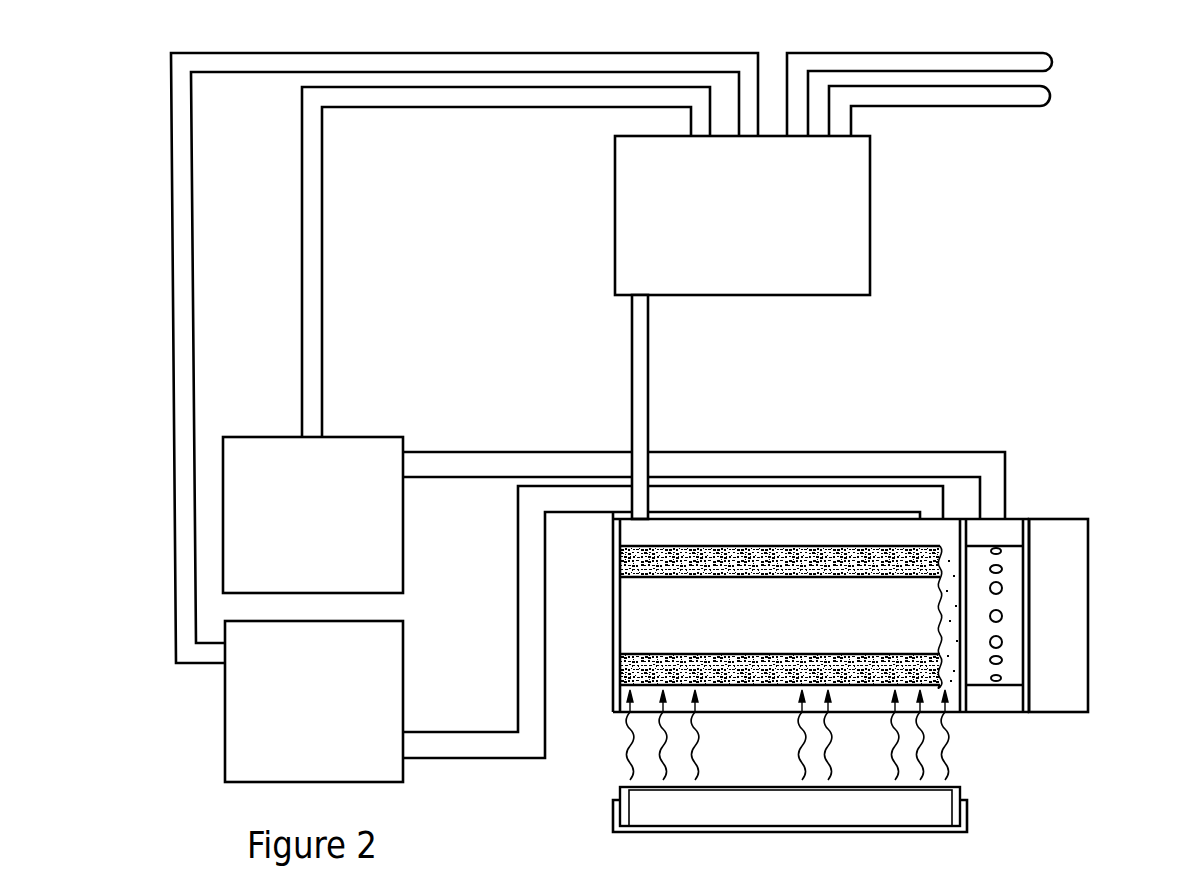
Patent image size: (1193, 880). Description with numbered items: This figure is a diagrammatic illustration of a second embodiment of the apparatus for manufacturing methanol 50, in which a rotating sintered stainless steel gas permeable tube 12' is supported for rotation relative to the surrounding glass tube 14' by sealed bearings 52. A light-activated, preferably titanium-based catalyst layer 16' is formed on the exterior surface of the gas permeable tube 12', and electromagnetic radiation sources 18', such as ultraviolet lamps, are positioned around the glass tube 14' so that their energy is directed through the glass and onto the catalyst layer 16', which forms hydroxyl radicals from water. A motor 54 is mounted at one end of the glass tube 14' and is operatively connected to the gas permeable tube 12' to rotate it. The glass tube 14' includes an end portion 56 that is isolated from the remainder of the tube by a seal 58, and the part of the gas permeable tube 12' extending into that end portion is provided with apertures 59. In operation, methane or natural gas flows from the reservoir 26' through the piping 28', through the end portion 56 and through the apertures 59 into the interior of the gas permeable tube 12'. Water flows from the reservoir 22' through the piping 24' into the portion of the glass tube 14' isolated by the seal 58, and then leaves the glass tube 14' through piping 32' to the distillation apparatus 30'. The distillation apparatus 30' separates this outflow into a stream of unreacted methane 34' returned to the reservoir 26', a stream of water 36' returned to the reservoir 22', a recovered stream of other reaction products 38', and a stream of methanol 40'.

The gas permeable tube 12' is at (789, 541).
The glass tube 14' is at (821, 695).
The catalyst layer 16' is at (787, 782).
The electromagnetic radiation sources 18' is at (738, 814).
The reservoir 22' is at (276, 701).
The piping 24' is at (673, 622).
The reservoir 26' is at (312, 482).
The piping 28' is at (704, 457).
The distillation apparatus 30' is at (790, 215).
The piping 32' is at (678, 407).
The stream of unreacted methane 34' is at (506, 262).
The stream of water 36' is at (410, 358).
The stream of other reaction products 38' is at (919, 72).
The stream of methanol 40' is at (939, 125).
The apparatus for manufacturing methanol 50 is at (158, 521).
The sealed bearings 52 is at (616, 519).
The motor 54 is at (1063, 562).
The end portion 56 is at (967, 532).
The seal 58 is at (1007, 532).
The apertures 59 is at (1003, 588).